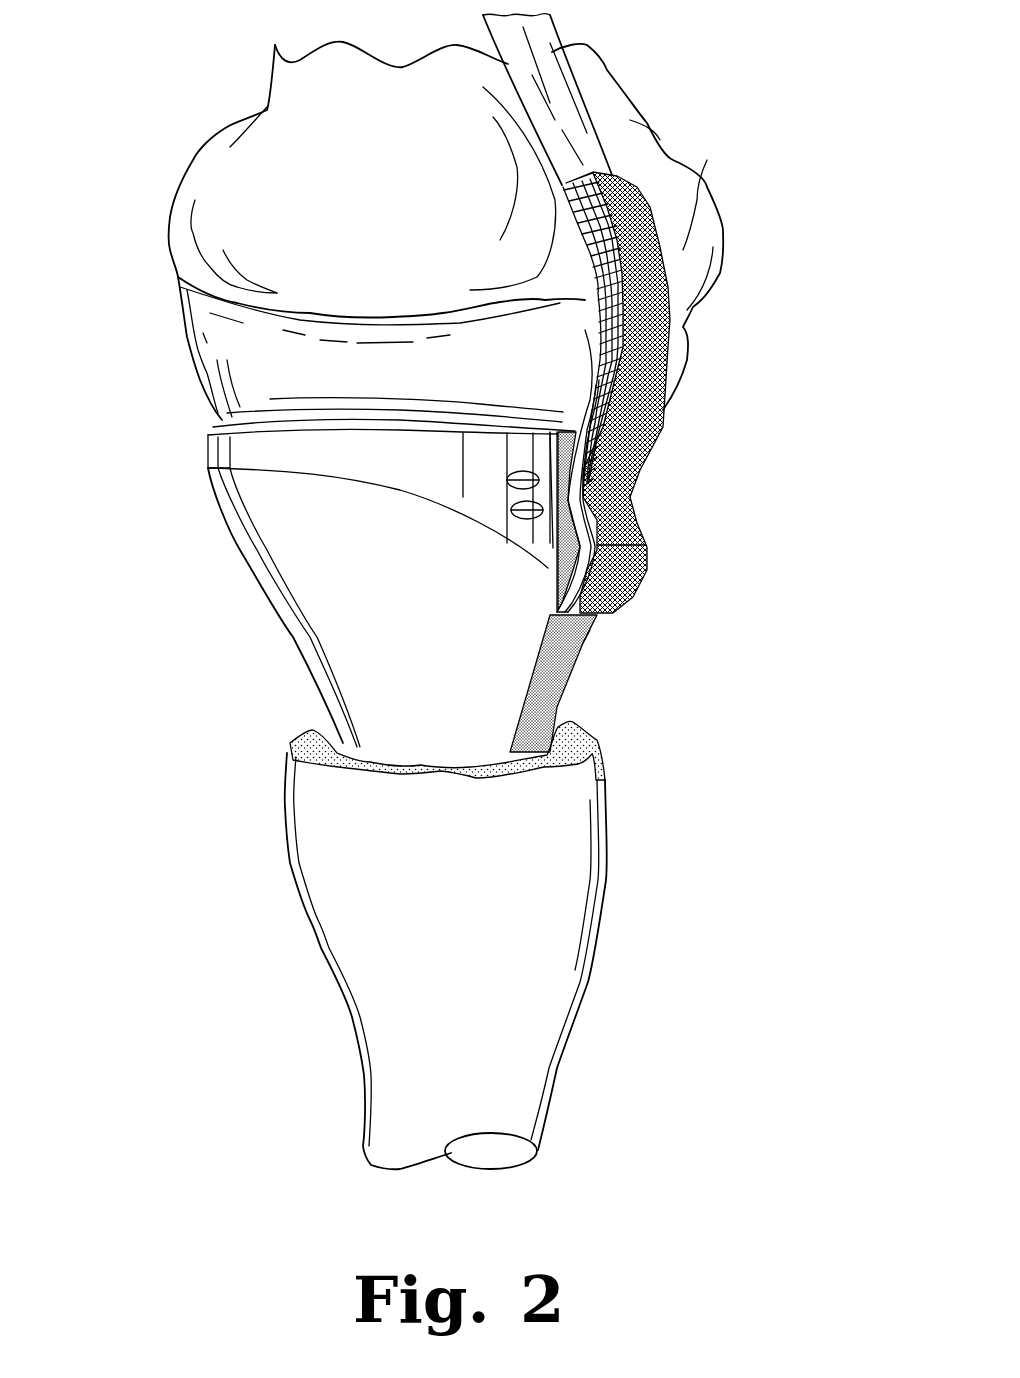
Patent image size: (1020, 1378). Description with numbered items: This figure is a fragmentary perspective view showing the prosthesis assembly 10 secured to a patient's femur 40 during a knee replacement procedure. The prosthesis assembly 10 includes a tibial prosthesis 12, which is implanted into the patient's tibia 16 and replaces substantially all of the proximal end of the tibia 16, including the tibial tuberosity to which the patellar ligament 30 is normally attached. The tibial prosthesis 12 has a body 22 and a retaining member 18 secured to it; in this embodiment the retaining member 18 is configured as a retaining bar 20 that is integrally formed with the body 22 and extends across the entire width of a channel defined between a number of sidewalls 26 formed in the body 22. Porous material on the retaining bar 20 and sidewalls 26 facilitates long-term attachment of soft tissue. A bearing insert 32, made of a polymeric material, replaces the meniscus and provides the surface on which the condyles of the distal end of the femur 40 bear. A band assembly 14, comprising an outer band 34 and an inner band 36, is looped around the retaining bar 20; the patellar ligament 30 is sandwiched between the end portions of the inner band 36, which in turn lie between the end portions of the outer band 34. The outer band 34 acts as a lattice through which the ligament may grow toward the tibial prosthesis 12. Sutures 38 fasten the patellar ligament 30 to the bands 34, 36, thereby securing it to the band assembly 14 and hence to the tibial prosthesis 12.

The prosthesis assembly 10 is at (712, 330).
The tibial prosthesis 12 is at (298, 533).
The band assembly 14 is at (658, 200).
The tibia 16 is at (549, 965).
The retaining member 18 is at (548, 571).
The retaining bar 20 is at (555, 550).
The body 22 is at (322, 612).
The sidewalls 26 is at (593, 630).
The patellar ligament 30 is at (560, 87).
The bearing insert 32 is at (238, 345).
The outer band 34 is at (637, 577).
The inner band 36 is at (563, 587).
The sutures 38 is at (580, 352).
The femur 40 is at (643, 135).